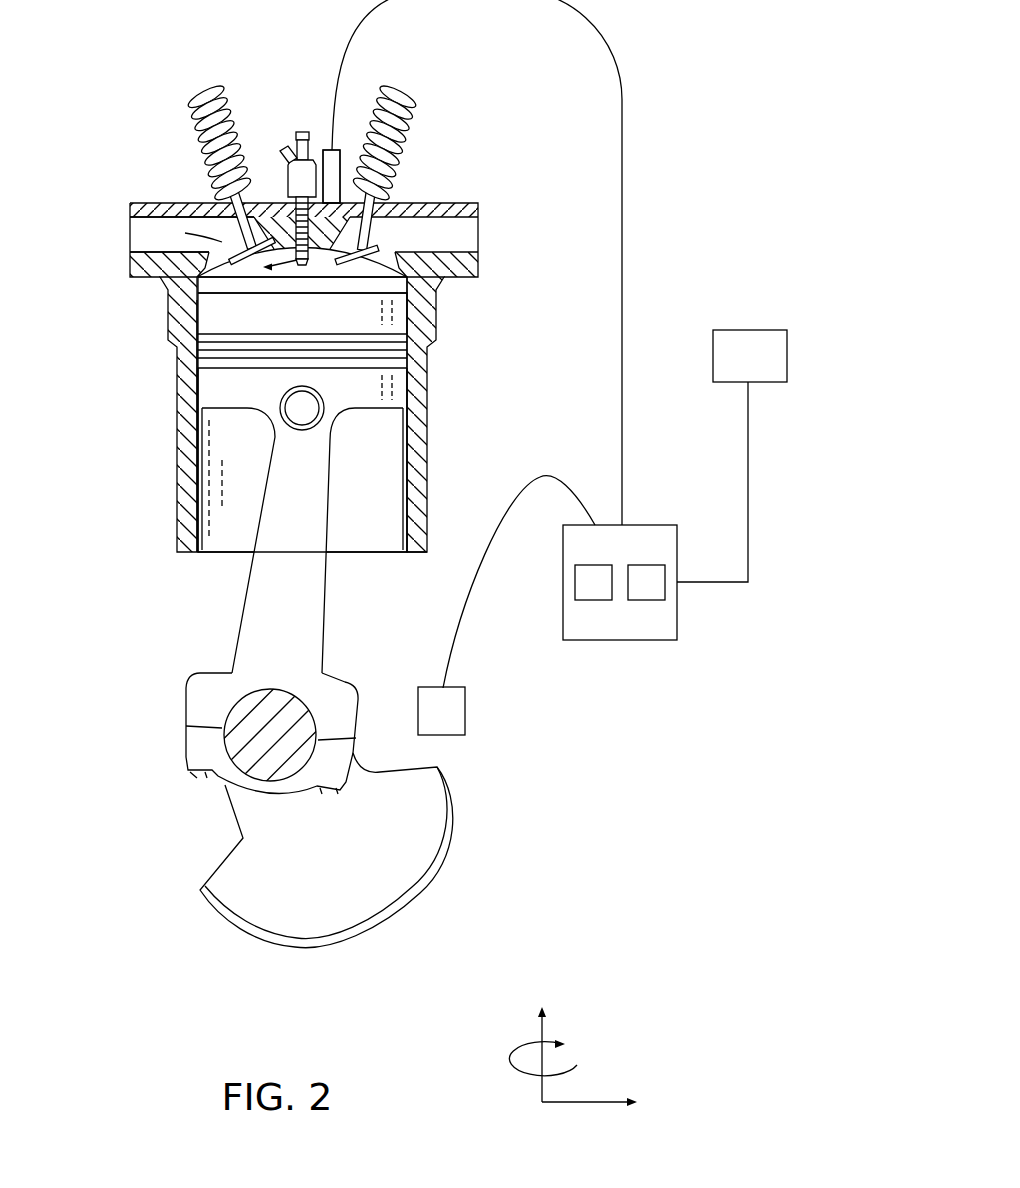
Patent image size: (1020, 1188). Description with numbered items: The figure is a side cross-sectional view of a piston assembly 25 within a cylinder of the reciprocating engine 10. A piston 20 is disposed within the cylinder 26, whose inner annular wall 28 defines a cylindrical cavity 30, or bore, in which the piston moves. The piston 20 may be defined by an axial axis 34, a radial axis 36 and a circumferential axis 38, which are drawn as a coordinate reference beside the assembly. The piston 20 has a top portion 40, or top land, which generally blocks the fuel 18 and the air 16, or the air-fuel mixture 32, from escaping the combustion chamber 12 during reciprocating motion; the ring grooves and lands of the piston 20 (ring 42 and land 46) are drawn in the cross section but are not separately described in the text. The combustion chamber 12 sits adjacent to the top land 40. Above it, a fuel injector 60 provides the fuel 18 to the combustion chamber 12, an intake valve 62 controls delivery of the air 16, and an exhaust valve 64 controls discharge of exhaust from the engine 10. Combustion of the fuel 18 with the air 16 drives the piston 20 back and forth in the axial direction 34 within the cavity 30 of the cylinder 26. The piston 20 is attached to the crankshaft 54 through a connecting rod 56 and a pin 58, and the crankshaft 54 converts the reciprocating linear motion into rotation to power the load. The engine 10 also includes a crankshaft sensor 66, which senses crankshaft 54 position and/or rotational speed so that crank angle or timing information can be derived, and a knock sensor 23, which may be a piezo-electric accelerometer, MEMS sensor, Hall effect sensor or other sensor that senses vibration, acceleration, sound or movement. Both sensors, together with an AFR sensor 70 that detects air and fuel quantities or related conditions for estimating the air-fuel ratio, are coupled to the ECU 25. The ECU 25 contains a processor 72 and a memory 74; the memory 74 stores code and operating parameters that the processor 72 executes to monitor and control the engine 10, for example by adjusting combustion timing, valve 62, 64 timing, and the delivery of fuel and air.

The reciprocating engine 10 is at (520, 108).
The combustion chamber 12 is at (345, 267).
The air 16 is at (228, 242).
The fuel 18 is at (302, 124).
The piston 20 is at (407, 420).
The knock sensor 23 is at (343, 152).
The piston assembly / ECU 25 is at (347, 517).
The cylinder 26 is at (177, 447).
The inner annular wall 28 is at (205, 480).
The cylindrical cavity 30 is at (218, 545).
The air-fuel mixture 32 is at (268, 284).
The axial axis 34 is at (540, 1040).
The radial axis 36 is at (585, 1102).
The circumferential axis 38 is at (577, 1065).
The top portion 40 is at (377, 400).
The piston ring 42 is at (204, 333).
The ring land 46 is at (360, 322).
The crankshaft 54 is at (242, 878).
The connecting rod 56 is at (307, 655).
The pin 58 is at (302, 424).
The fuel injector 60 is at (326, 150).
The intake valve 62 is at (205, 92).
The exhaust valve 64 is at (400, 94).
The crankshaft sensor 66 is at (466, 712).
The AFR sensor 70 is at (750, 330).
The processor 72 is at (590, 600).
The memory 74 is at (645, 600).